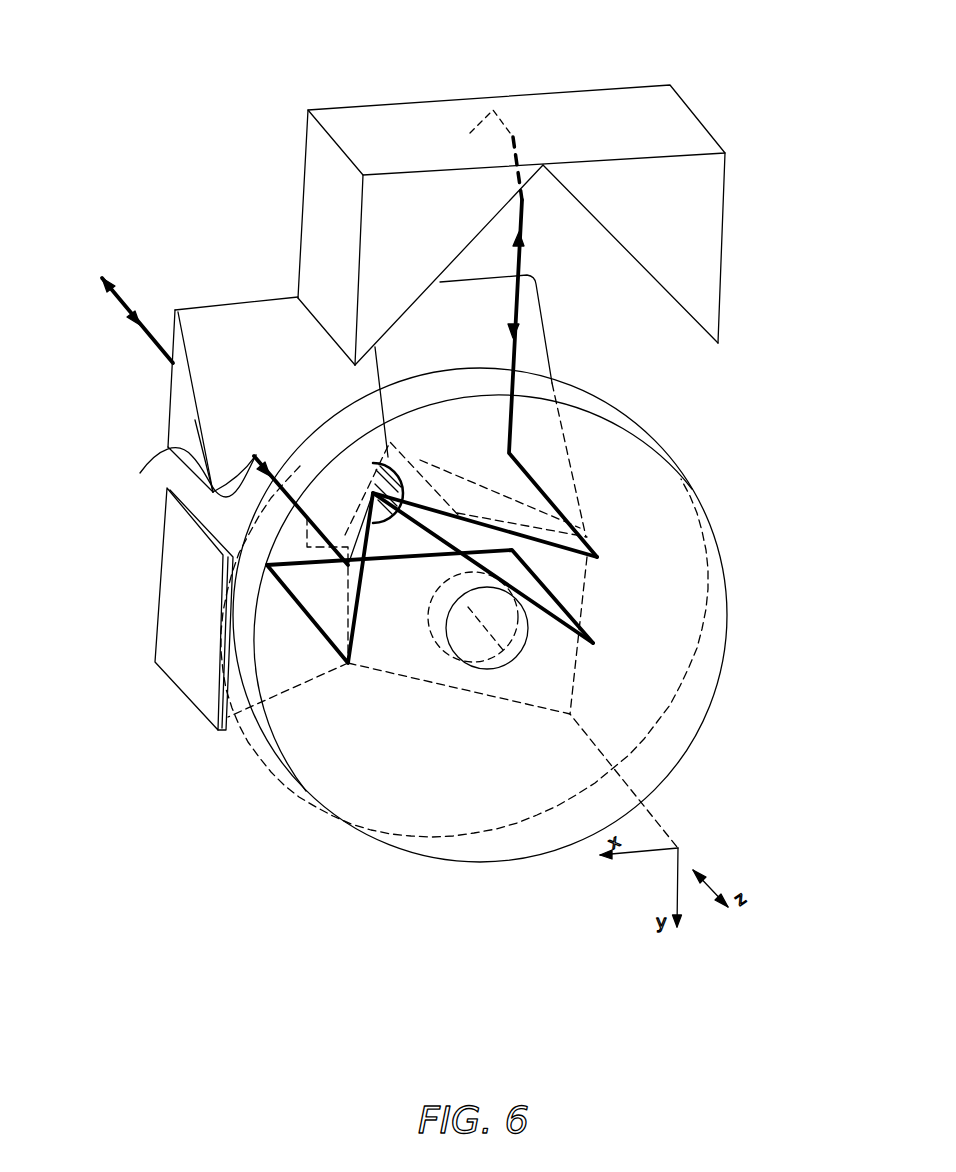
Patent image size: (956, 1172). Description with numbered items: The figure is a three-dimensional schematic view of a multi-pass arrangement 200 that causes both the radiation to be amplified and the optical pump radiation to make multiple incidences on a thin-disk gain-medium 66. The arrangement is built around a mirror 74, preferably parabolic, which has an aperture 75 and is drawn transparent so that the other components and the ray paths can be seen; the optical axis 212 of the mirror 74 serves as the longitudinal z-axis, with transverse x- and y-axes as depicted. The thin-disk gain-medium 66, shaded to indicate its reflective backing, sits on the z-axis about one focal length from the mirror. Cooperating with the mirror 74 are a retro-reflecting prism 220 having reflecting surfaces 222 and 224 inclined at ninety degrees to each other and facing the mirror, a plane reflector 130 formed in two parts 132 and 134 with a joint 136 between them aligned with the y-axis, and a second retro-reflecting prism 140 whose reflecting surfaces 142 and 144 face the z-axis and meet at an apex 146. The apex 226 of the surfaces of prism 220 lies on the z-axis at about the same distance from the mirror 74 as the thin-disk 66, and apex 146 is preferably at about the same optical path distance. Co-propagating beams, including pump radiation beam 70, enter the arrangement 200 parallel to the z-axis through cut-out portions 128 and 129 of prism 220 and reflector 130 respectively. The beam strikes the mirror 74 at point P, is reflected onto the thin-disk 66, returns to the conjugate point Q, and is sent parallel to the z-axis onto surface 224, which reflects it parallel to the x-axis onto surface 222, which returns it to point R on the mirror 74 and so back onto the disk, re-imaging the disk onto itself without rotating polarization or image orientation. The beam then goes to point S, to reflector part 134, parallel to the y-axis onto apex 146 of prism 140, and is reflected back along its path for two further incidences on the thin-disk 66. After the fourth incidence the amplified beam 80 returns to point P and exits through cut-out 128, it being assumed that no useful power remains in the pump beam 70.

The thin-disk gain-medium 66 is at (383, 458).
The pump radiation beam 70 is at (130, 330).
The mirror 74 is at (643, 644).
The aperture 75 is at (468, 649).
The amplified beam 80 is at (110, 280).
The cut-out portion 128 is at (167, 487).
The cut-out portion 129 is at (140, 473).
The plane reflector 130 is at (557, 358).
The plane reflector part 132 is at (228, 306).
The plane reflector part 134 is at (522, 343).
The joint 136 is at (376, 378).
The retro-reflecting prism 140 is at (727, 273).
The reflecting surface 142 is at (487, 227).
The reflecting surface 144 is at (638, 257).
The apex 146 is at (517, 137).
The multi-pass arrangement 200 is at (283, 945).
The optical axis 212 is at (645, 810).
The retro-reflecting prism 220 is at (180, 693).
The reflecting surface 222 is at (288, 682).
The reflecting surface 224 is at (551, 667).
The apex 226 is at (313, 675).